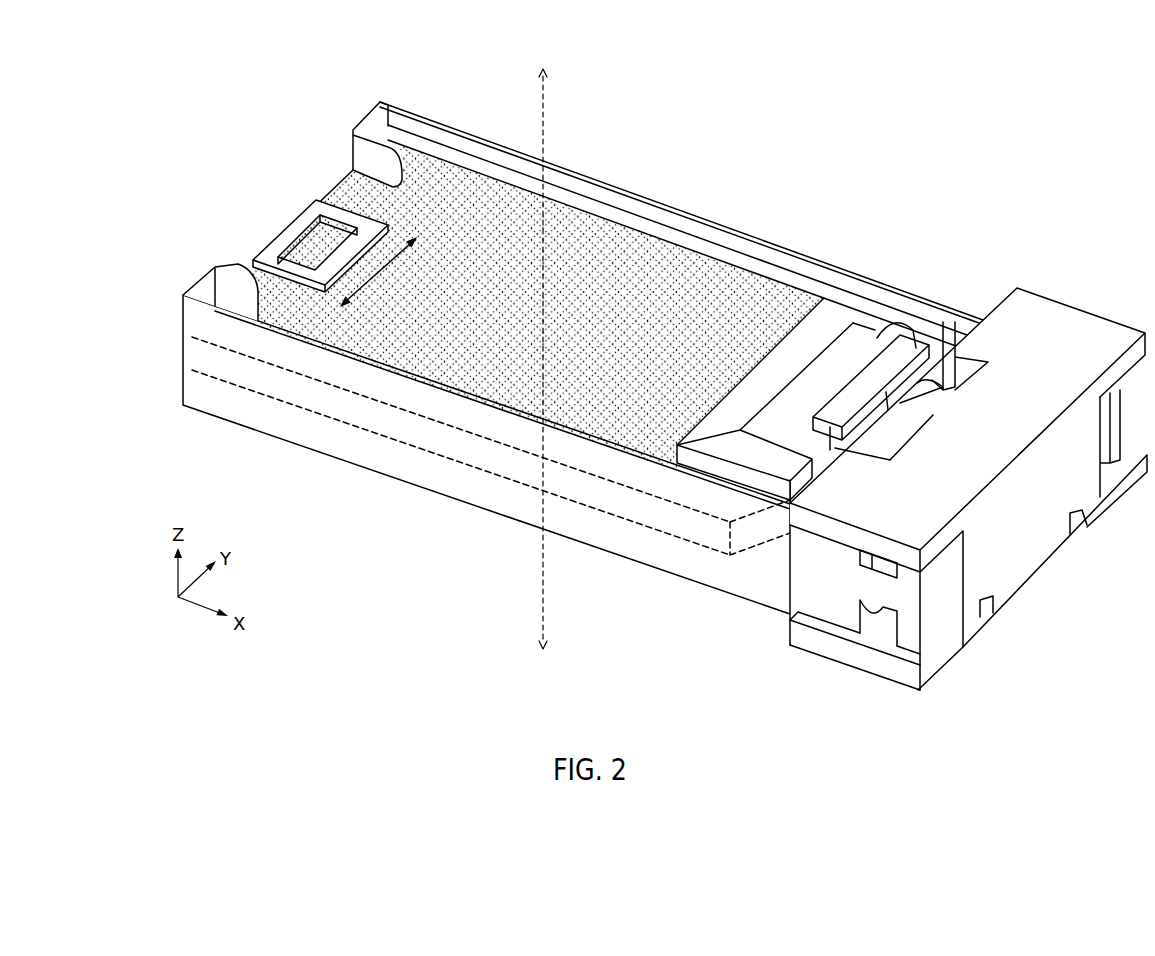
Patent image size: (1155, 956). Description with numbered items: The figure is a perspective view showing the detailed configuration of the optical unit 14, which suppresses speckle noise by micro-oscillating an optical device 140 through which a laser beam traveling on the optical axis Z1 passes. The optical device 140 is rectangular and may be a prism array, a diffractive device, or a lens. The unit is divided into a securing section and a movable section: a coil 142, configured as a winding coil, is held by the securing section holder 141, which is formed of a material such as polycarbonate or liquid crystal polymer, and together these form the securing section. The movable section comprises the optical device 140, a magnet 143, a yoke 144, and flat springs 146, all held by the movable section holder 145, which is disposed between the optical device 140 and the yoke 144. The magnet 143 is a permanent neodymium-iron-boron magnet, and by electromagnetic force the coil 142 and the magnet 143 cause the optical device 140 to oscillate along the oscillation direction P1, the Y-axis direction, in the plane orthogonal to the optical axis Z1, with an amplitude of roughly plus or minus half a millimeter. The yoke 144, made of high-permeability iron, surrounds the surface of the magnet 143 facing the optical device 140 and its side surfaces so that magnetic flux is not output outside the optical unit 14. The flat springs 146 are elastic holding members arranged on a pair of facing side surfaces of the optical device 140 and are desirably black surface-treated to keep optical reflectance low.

The optical unit 14 is at (923, 90).
The optical device 140 is at (430, 356).
The securing section holder 141 is at (1033, 568).
The coil 142 is at (963, 320).
The magnet 143 is at (905, 430).
The yoke 144 is at (852, 352).
The movable section holder 145 is at (808, 332).
The flat springs 146 is at (453, 128).
The oscillation direction P1 is at (397, 232).
The optical axis Z1 is at (548, 113).